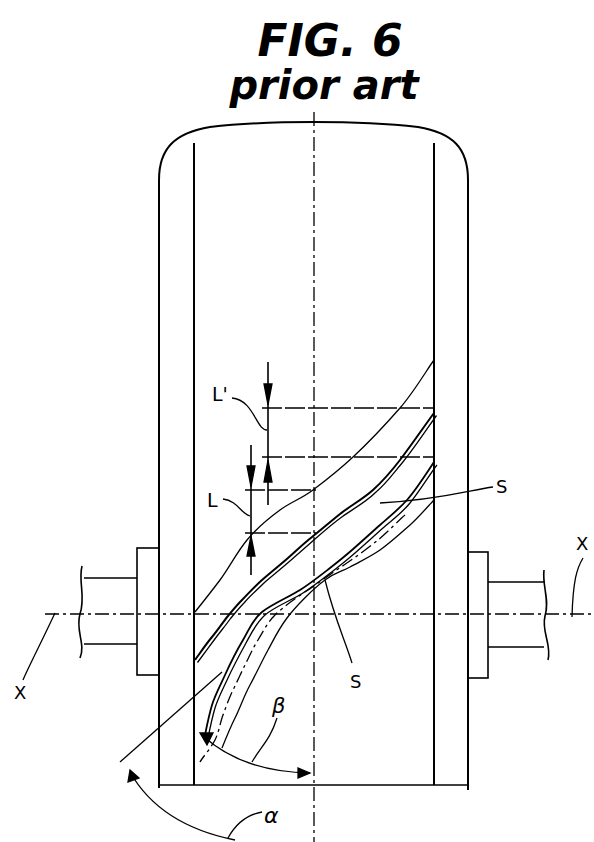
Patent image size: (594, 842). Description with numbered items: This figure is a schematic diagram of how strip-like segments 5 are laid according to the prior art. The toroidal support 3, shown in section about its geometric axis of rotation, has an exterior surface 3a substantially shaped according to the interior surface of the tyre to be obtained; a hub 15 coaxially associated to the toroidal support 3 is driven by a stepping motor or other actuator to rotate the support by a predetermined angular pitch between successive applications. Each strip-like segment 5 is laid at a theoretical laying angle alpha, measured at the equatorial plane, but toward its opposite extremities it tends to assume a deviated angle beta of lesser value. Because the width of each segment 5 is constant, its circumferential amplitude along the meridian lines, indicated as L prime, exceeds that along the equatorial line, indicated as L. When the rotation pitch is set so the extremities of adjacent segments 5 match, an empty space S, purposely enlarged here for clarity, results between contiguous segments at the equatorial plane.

The toroidal support 3 is at (458, 272).
The exterior surface 3a is at (400, 722).
The strip-like segment 5 is at (222, 590).
The hub 15 is at (145, 563).